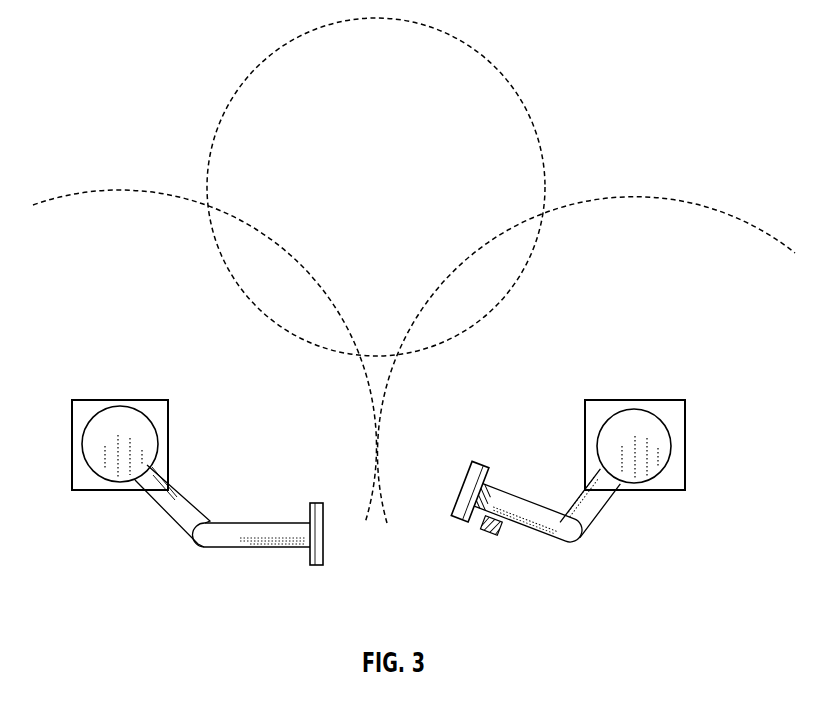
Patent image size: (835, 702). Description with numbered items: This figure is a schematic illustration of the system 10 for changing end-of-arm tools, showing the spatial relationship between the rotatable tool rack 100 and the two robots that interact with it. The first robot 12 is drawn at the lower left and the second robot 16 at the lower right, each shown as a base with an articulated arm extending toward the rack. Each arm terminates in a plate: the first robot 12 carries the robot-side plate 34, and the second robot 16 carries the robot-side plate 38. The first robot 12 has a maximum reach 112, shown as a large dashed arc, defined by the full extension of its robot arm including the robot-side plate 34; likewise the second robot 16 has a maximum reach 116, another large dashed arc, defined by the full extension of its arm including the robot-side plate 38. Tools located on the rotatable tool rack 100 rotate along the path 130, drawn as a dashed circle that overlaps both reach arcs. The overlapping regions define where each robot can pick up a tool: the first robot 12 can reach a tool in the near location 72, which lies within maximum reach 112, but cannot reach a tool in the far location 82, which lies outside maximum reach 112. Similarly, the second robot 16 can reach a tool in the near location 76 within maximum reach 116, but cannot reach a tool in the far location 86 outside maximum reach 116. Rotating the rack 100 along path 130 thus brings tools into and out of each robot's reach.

The system 10 is at (648, 128).
The first robot 12 is at (123, 432).
The second robot 16 is at (633, 430).
The robot-side plate 34 is at (308, 562).
The robot-side plate 38 is at (480, 458).
The near location 72 is at (287, 293).
The near location 76 is at (483, 303).
The far location 82 is at (465, 140).
The far location 86 is at (323, 123).
The rotatable tool rack 100 is at (217, 78).
The maximum reach 112 is at (70, 195).
The maximum reach 116 is at (707, 203).
The path 130 is at (488, 64).